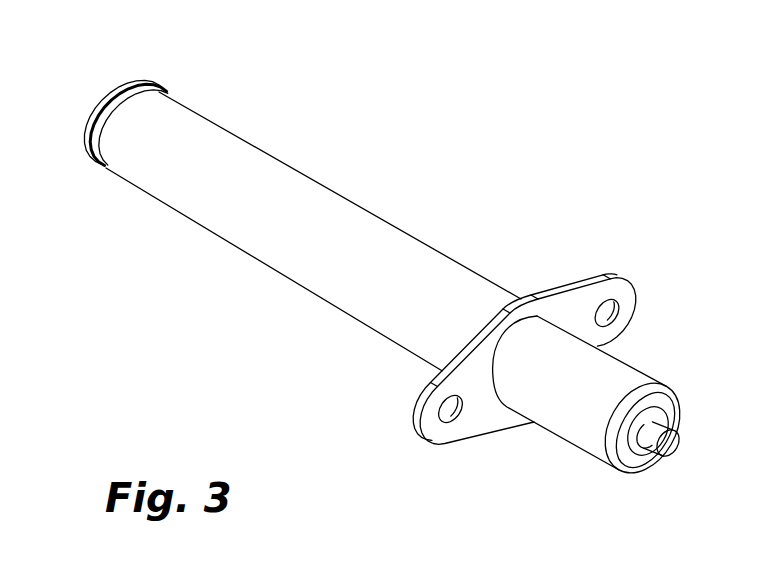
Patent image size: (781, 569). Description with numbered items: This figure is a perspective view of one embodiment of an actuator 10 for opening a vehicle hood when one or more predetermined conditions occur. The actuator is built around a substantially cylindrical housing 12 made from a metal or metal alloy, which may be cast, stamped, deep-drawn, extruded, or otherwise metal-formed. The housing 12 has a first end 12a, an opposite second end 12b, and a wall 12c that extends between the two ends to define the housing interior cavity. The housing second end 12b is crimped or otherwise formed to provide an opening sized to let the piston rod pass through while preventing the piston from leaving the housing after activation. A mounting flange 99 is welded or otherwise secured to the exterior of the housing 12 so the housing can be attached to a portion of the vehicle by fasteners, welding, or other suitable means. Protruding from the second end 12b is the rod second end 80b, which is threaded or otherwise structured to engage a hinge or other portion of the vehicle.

The actuator 10 is at (277, 84).
The housing 12 is at (330, 302).
The first end 12a is at (96, 106).
The second end 12b is at (620, 465).
The wall 12c is at (214, 192).
The mounting flange 99 is at (565, 287).
The second end 80b is at (670, 446).